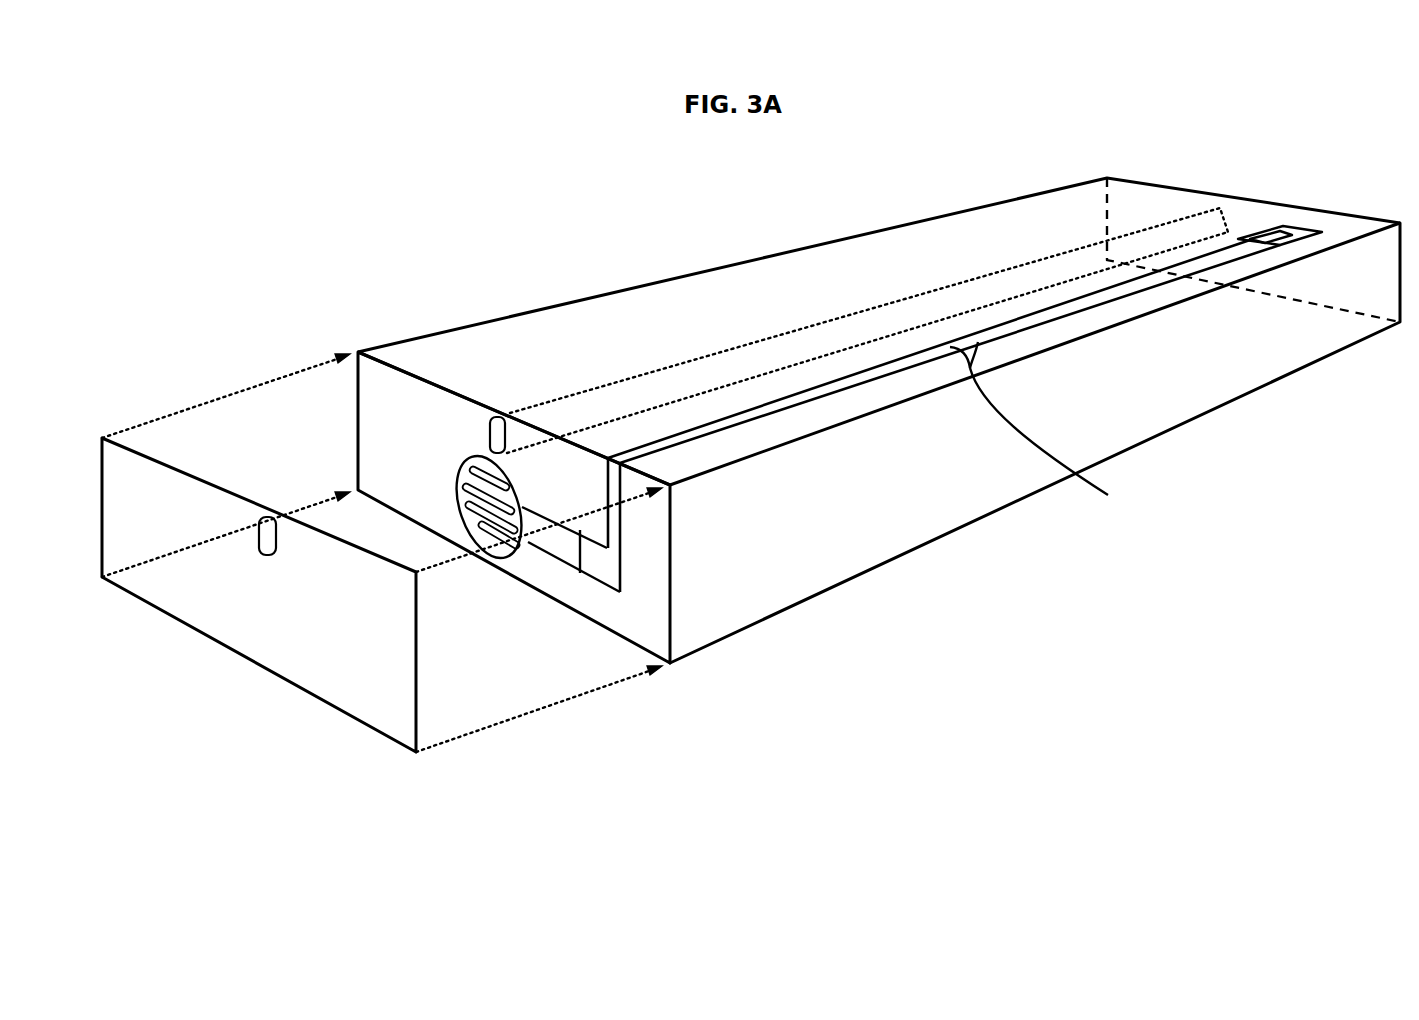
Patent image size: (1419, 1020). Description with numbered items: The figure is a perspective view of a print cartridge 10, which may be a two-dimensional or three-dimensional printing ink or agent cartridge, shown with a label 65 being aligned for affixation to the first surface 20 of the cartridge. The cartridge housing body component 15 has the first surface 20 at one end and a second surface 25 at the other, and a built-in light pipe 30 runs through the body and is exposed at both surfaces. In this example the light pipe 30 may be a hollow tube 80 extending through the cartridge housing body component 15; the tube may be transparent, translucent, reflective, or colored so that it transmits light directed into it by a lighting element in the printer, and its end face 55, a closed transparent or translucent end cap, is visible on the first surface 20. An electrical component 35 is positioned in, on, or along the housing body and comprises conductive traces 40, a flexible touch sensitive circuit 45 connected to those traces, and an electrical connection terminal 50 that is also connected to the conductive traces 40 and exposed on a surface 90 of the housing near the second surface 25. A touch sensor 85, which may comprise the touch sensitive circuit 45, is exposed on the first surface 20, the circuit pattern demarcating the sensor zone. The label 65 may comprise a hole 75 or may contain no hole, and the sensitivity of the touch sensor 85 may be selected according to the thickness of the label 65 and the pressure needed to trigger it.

The print cartridge 10 is at (358, 277).
The cartridge housing body component 15 is at (735, 263).
The first surface 20 is at (551, 494).
The second surface 25 is at (1123, 221).
The light pipe 30 is at (934, 281).
The electrical component 35 is at (586, 590).
The conductive traces 40 is at (1052, 426).
The touch sensitive circuit 45 is at (525, 549).
The electrical connection terminal 50 is at (1290, 240).
The end face 55 is at (490, 431).
The label 65 is at (343, 712).
The hole 75 is at (268, 517).
The hollow tube 80 is at (875, 323).
The touch sensor 85 is at (447, 497).
The surface 90 is at (589, 347).